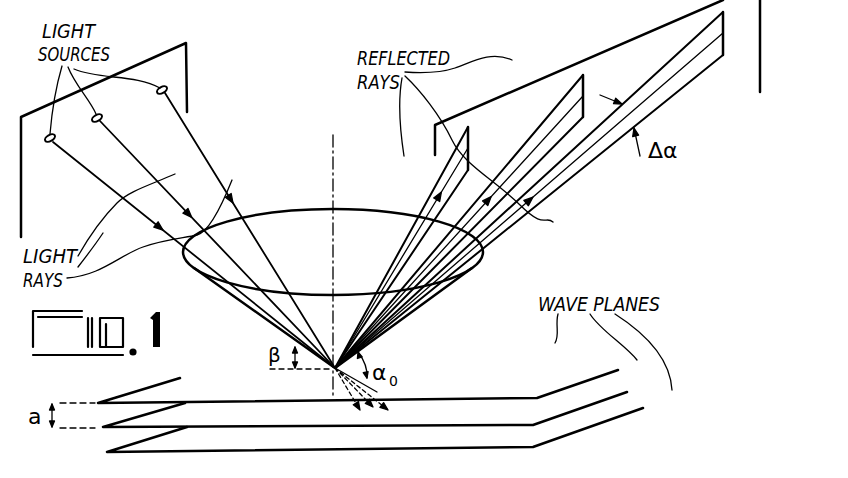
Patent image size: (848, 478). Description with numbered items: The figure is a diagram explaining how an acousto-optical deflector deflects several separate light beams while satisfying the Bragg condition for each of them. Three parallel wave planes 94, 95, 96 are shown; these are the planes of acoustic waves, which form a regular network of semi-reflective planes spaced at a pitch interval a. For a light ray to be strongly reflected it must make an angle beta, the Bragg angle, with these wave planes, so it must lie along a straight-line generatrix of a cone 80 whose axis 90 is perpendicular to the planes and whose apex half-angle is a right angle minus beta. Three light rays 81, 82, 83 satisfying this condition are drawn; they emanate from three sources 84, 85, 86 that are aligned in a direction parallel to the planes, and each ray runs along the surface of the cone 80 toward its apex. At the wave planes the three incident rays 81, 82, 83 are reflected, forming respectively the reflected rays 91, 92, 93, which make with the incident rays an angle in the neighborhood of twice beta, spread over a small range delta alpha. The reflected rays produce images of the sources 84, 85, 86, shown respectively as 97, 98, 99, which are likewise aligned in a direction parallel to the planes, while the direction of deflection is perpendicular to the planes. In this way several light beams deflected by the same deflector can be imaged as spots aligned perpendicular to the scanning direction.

The cone 80 is at (296, 212).
The light ray 81 is at (160, 230).
The light ray 82 is at (183, 207).
The light ray 83 is at (234, 198).
The source 84 is at (50, 143).
The source 85 is at (101, 120).
The source 86 is at (168, 92).
The axis 90 is at (336, 157).
The reflected ray 91 is at (523, 207).
The reflected ray 92 is at (533, 145).
The reflected ray 93 is at (443, 172).
The wave plane 94 is at (532, 398).
The wave plane 95 is at (593, 404).
The wave plane 96 is at (634, 411).
The image of source 97 is at (724, 38).
The image of source 98 is at (586, 77).
The image of source 99 is at (470, 130).